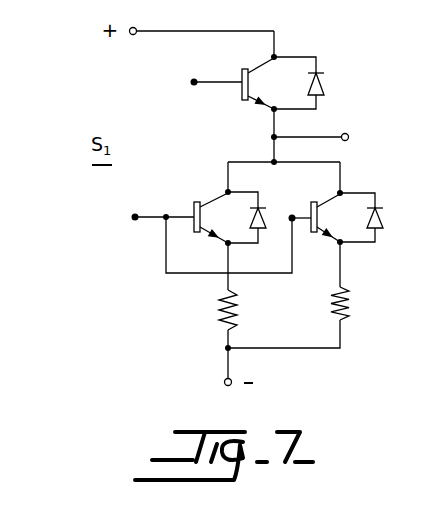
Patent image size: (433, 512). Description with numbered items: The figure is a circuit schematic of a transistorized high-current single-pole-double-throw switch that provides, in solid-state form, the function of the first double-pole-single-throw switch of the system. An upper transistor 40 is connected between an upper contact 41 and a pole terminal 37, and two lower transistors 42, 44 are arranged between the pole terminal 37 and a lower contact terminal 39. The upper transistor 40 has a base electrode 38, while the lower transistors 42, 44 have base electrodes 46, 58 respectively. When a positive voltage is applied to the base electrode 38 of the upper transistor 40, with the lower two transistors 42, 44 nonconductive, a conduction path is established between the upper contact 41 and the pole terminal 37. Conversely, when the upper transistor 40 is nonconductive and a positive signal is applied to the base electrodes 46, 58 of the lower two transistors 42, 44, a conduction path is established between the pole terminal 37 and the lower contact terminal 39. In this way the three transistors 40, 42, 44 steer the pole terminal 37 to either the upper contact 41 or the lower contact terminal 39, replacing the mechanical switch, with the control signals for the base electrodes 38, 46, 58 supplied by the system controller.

The pole terminal 37 is at (349, 134).
The base electrode 38 is at (192, 85).
The lower contact terminal 39 is at (222, 379).
The upper transistor 40 is at (262, 64).
The upper contact 41 is at (133, 35).
The lower transistor 42 is at (192, 203).
The lower transistor 44 is at (309, 203).
The base electrode 46 is at (135, 221).
The base electrode 58 is at (296, 223).